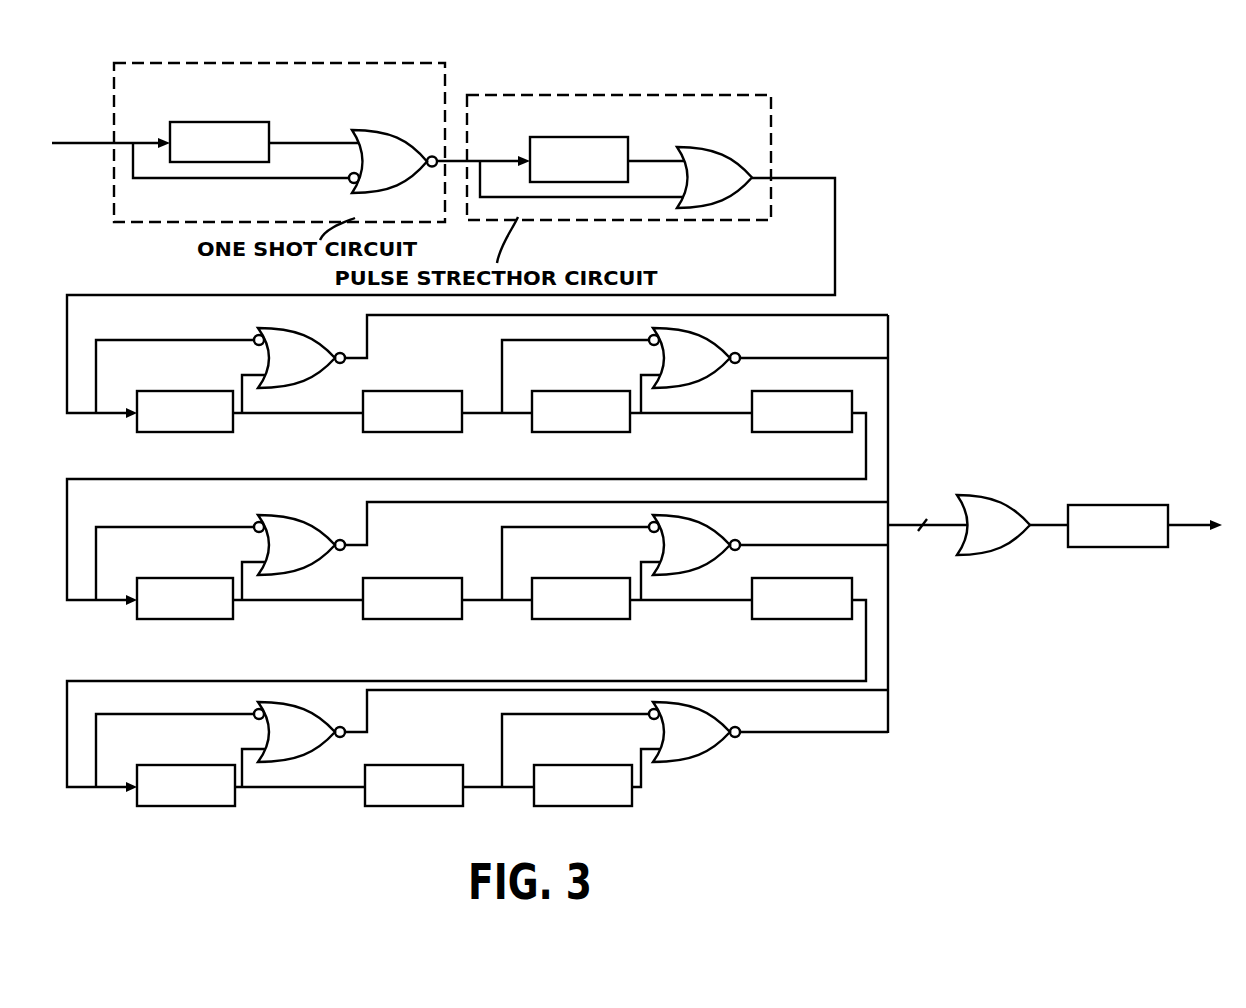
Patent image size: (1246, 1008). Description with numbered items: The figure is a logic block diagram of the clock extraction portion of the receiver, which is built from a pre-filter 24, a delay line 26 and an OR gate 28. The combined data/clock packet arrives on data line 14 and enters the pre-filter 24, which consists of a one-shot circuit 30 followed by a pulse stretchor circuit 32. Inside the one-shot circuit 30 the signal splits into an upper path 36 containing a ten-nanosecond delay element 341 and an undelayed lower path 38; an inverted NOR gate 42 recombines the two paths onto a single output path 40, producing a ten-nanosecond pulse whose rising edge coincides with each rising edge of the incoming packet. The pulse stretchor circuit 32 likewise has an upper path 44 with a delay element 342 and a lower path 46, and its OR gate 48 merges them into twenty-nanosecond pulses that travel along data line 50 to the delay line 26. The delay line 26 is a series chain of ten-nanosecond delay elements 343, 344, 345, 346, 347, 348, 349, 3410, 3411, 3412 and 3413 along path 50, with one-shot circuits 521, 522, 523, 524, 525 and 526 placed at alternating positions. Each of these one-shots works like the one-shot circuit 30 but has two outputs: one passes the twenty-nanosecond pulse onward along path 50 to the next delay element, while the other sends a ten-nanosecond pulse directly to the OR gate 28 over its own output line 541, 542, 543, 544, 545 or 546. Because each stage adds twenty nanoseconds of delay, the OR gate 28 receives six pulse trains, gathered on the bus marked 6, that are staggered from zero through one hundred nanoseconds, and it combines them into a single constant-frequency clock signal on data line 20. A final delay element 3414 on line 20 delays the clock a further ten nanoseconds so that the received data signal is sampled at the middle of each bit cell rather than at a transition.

The data line 14 is at (73, 142).
The data line 20 is at (1185, 520).
The pre-filter 24 is at (818, 111).
The delay line 26 is at (925, 358).
The OR gate 28 is at (993, 553).
The one-shot circuit 30 is at (362, 73).
The pulse stretchor circuit 32 is at (685, 97).
The delay element 341 is at (232, 126).
The delay element 342 is at (547, 140).
The delay element 343 is at (178, 433).
The delay element 344 is at (428, 433).
The delay element 345 is at (600, 433).
The delay element 346 is at (820, 433).
The delay element 347 is at (185, 619).
The delay element 348 is at (430, 619).
The delay element 349 is at (600, 619).
The delay element 3410 is at (822, 619).
The delay element 3411 is at (215, 807).
The delay element 3412 is at (390, 806).
The delay element 3413 is at (560, 806).
The delay element 3414 is at (1135, 547).
The upper path 36 is at (303, 140).
The lower path 38 is at (298, 182).
The output path 40 is at (452, 163).
The inverted NOR gate 42 is at (387, 139).
The upper path 44 is at (492, 160).
The lower path 46 is at (608, 174).
The OR gate 48 is at (708, 205).
The data line 50 is at (837, 188).
The one-shot circuit 521 is at (207, 328).
The one-shot circuit 522 is at (749, 340).
The one-shot circuit 523 is at (290, 616).
The one-shot circuit 524 is at (687, 594).
The one-shot circuit 525 is at (290, 808).
The one-shot circuit 526 is at (723, 766).
The output line 541 is at (877, 313).
The output line 542 is at (867, 360).
The output line 543 is at (870, 497).
The output line 544 is at (870, 545).
The output line 545 is at (873, 690).
The output line 546 is at (873, 732).
The bus line 6 is at (927, 515).